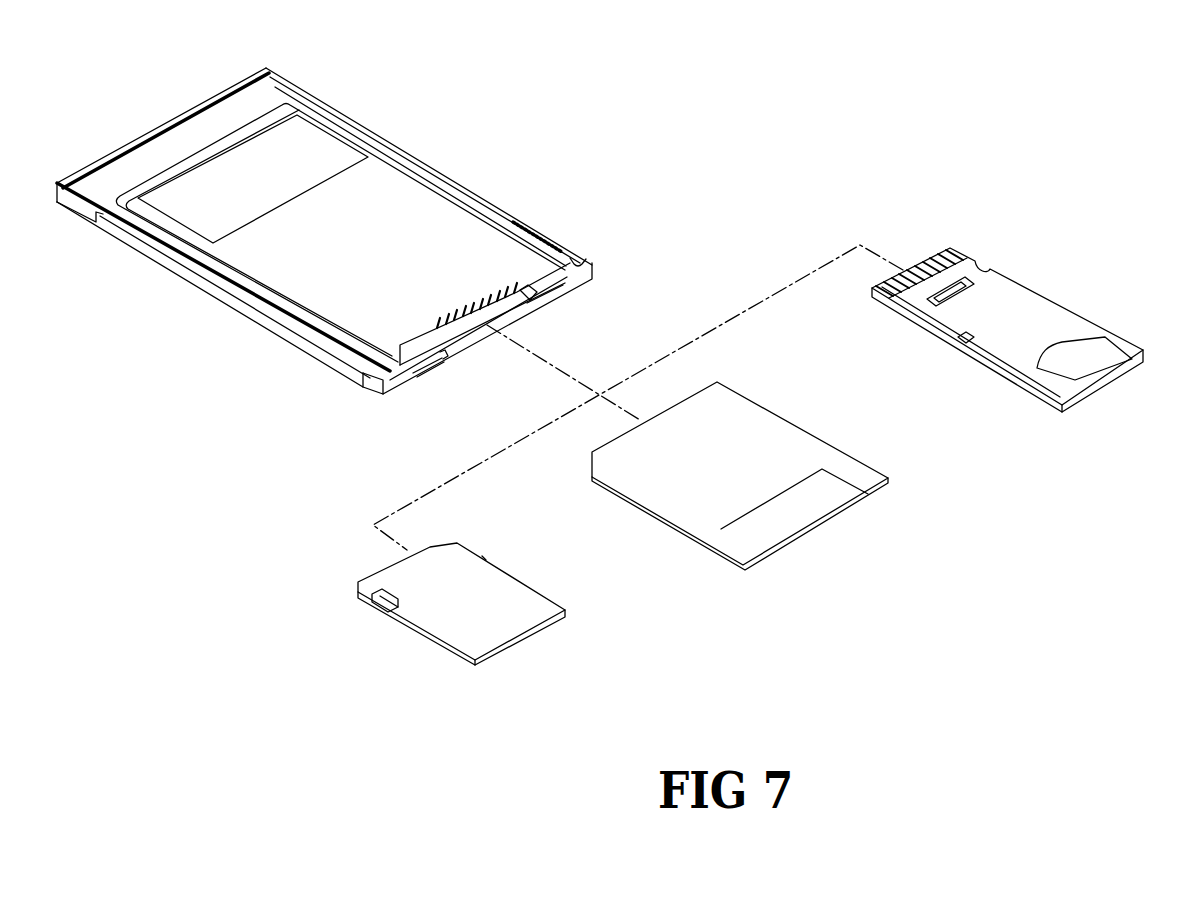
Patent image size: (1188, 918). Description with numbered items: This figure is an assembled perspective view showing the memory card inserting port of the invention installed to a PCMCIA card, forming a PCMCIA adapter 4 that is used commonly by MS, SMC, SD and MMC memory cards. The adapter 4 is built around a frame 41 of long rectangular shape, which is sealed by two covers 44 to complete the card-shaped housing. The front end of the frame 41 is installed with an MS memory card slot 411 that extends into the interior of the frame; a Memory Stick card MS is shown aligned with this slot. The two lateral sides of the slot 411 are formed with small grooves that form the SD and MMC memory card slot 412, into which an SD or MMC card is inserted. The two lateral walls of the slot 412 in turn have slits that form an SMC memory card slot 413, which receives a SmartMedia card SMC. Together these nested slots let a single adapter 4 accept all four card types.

The PCMCIA adapter 4 is at (374, 259).
The covers 44 is at (383, 182).
The frame 41 is at (540, 310).
The MS memory card slot 411 is at (517, 287).
The SD and MMC memory card slot 412 is at (445, 352).
The SMC memory card slot 413 is at (577, 267).
The SMC memory card SMC is at (798, 515).
The MS memory card MS is at (1073, 377).